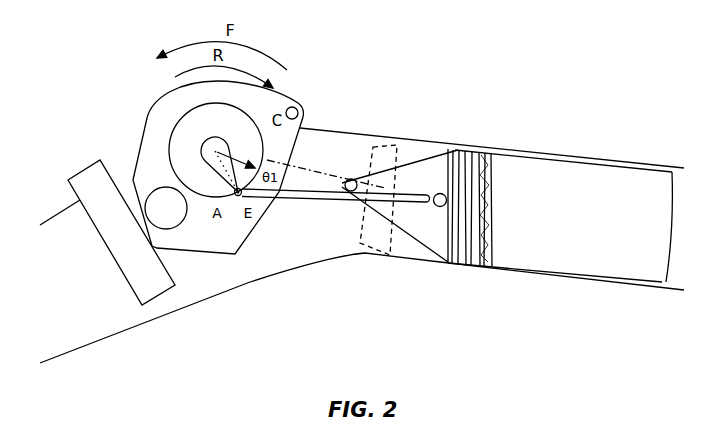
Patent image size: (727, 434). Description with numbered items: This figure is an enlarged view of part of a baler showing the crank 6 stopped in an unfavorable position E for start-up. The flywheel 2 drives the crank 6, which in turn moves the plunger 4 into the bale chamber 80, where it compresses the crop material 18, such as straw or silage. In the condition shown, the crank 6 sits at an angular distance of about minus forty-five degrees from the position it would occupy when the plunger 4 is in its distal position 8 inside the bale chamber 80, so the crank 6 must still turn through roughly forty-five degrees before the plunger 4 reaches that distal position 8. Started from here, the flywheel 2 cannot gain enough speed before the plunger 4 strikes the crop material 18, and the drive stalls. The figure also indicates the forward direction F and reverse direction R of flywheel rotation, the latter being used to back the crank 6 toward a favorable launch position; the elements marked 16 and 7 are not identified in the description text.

The flywheel 2 is at (84, 168).
The crank 6 is at (205, 148).
The plunger 4 is at (418, 162).
The crop material 18 is at (475, 148).
The bale chamber 80 is at (556, 153).
The inner tube 16 is at (607, 190).
The hidden member 7 is at (371, 260).
The distal position 8 is at (463, 268).